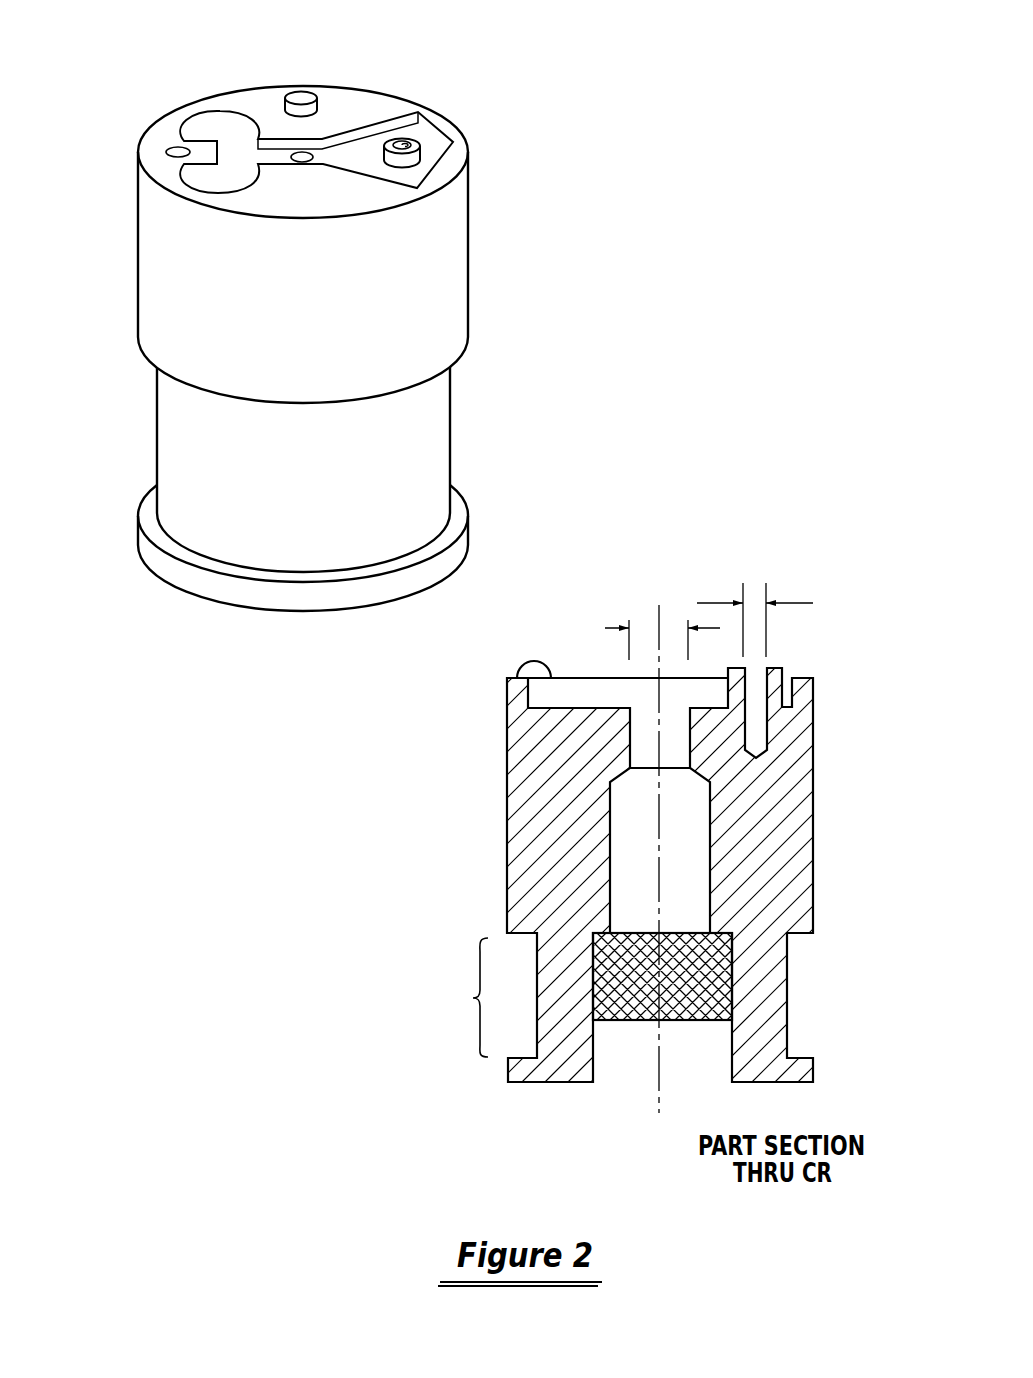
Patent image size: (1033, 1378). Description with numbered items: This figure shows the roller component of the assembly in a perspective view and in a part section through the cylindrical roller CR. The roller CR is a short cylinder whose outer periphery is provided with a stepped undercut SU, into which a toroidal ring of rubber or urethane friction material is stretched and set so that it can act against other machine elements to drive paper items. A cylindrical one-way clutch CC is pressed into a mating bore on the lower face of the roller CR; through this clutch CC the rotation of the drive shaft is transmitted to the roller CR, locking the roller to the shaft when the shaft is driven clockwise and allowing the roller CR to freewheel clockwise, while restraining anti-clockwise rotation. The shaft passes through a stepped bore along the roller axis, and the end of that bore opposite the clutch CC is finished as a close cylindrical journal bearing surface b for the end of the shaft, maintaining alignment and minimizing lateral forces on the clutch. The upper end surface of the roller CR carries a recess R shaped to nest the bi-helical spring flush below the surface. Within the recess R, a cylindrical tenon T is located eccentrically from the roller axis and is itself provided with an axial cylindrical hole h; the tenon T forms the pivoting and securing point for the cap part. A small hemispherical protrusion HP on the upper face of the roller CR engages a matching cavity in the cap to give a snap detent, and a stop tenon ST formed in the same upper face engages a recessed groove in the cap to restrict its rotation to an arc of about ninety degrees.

The cylindrical roller CR is at (468, 251).
The stepped undercut SU is at (452, 438).
The recess R is at (232, 128).
The stop tenon ST is at (305, 97).
The cylindrical tenon T is at (420, 156).
The axial cylindrical hole h is at (406, 147).
The journal bearing surface b is at (306, 153).
The hemispherical protrusion HP is at (178, 150).
The one-way clutch CC is at (703, 972).